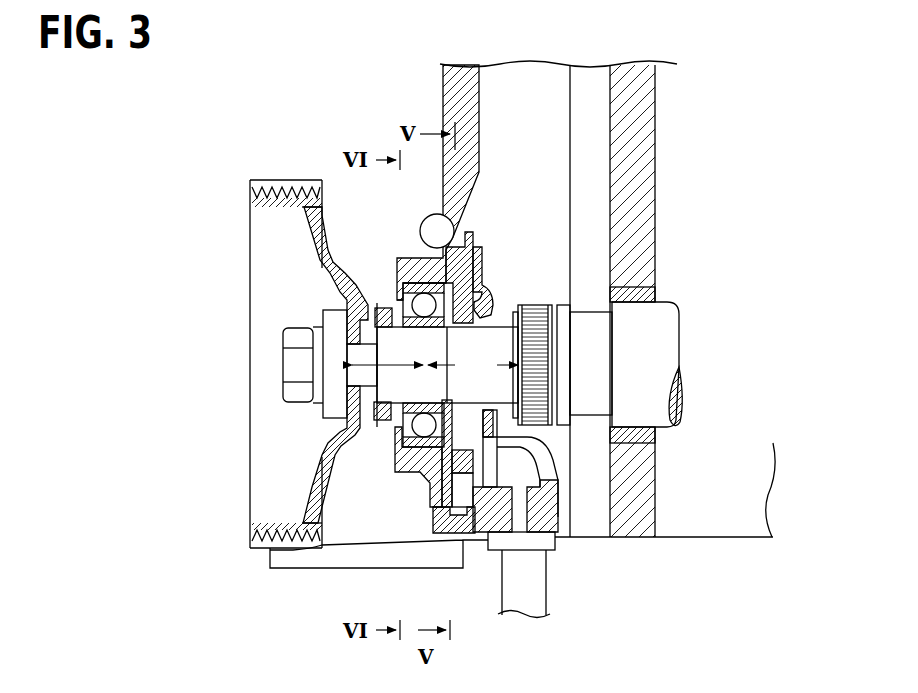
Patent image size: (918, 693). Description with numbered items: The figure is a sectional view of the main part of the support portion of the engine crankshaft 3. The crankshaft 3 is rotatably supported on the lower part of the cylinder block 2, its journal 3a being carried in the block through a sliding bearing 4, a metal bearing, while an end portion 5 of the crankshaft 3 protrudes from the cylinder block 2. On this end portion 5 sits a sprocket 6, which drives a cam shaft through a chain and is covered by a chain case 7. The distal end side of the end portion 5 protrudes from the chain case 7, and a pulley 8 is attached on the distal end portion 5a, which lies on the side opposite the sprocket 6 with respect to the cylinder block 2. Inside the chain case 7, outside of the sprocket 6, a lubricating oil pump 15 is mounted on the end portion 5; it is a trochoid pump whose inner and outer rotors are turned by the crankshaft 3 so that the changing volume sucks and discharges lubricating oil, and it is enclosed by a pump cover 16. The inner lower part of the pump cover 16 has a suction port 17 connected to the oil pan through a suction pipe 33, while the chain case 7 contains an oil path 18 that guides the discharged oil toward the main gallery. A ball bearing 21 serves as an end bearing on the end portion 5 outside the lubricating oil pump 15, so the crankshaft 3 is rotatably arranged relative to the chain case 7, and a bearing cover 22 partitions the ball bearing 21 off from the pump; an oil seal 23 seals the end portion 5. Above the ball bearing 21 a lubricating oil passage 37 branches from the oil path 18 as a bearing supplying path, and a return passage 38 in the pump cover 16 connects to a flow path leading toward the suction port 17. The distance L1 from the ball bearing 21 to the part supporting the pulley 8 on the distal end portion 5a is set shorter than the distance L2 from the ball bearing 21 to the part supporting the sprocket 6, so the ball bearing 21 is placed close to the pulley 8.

The cylinder block 2 is at (648, 108).
The crankshaft 3 is at (668, 290).
The journal 3a is at (662, 416).
The sliding bearing 4 is at (641, 284).
The end portion 5 is at (503, 330).
The distal end portion 5a is at (389, 392).
The sprocket 6 is at (546, 305).
The chain case 7 is at (450, 107).
The pulley 8 is at (276, 192).
The lubricating oil pump 15 is at (464, 296).
The pump cover 16 is at (559, 477).
The suction port 17 is at (523, 510).
The oil path 18 is at (432, 226).
The ball bearing 21 is at (401, 424).
The bearing cover 22 is at (473, 258).
The oil seal 23 is at (383, 310).
The suction pipe 33 is at (532, 605).
The lubricating oil passage 37 is at (440, 278).
The return passage 38 is at (441, 456).
The distance L1 is at (352, 352).
The distance L2 is at (473, 366).